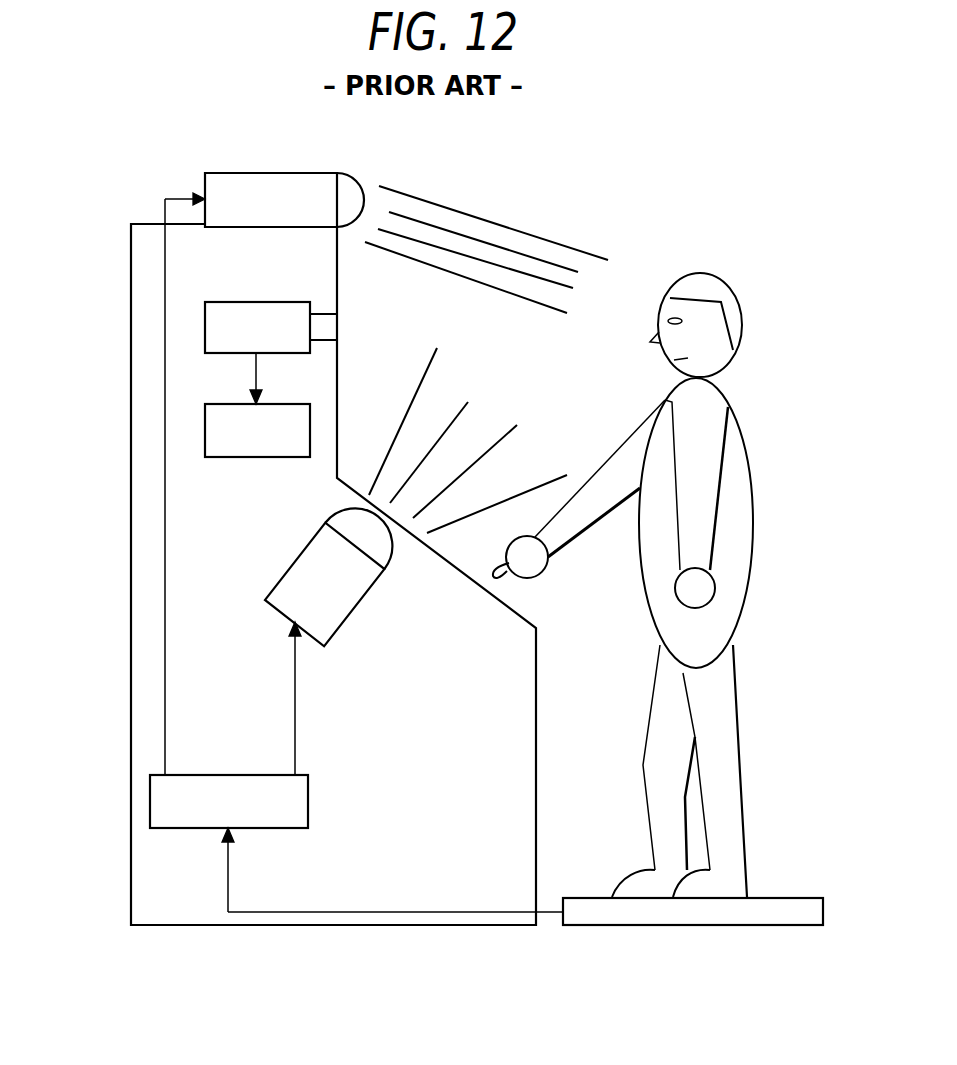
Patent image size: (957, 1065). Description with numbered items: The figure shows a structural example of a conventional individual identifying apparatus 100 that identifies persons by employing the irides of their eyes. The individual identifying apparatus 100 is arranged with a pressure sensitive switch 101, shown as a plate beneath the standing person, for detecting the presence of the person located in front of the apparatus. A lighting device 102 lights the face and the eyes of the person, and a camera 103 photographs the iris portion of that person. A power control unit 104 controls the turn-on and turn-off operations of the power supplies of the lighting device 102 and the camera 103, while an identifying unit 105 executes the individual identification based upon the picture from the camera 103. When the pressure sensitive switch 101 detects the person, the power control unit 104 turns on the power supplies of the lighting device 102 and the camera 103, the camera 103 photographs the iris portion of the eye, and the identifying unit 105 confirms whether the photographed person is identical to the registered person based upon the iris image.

The individual identifying apparatus 100 is at (131, 262).
The pressure sensitive switch 101 is at (783, 898).
The lighting device 102 is at (263, 173).
The camera 103 is at (205, 330).
The power control unit 104 is at (150, 801).
The identifying unit 105 is at (205, 433).